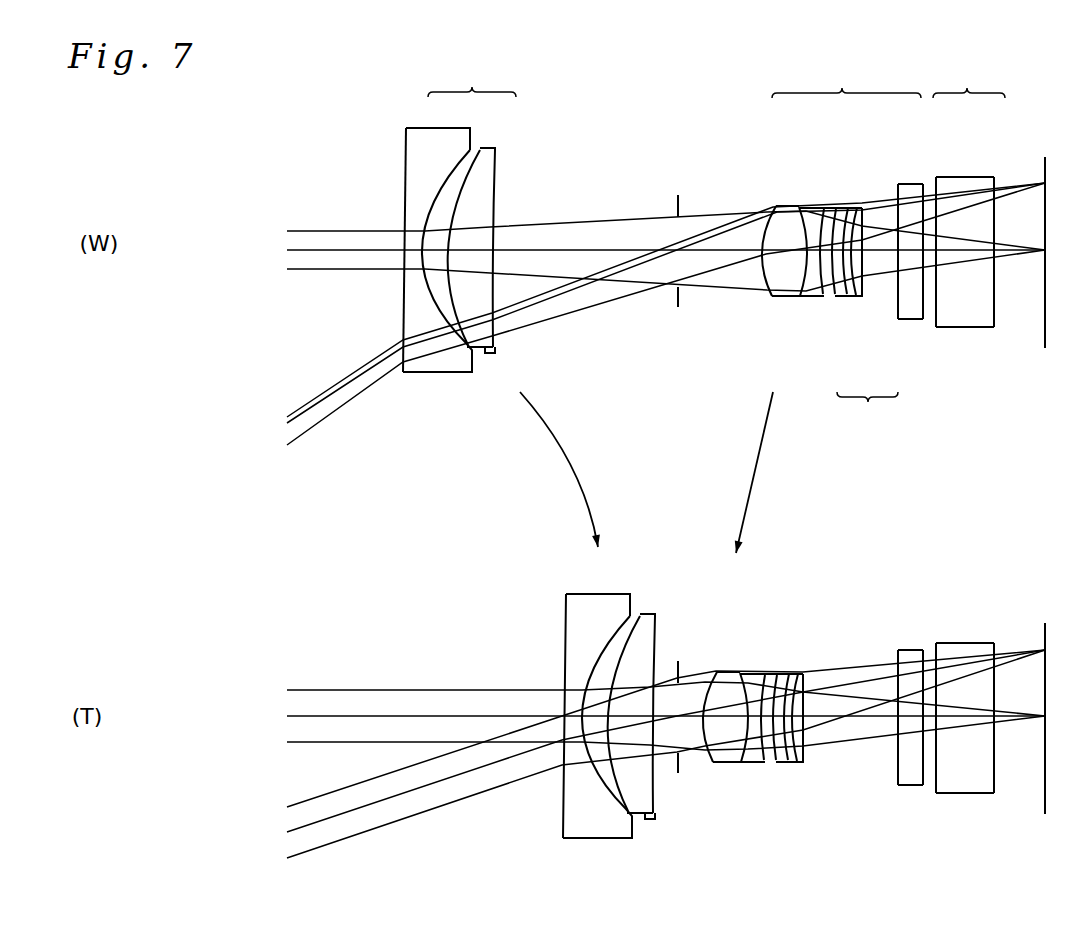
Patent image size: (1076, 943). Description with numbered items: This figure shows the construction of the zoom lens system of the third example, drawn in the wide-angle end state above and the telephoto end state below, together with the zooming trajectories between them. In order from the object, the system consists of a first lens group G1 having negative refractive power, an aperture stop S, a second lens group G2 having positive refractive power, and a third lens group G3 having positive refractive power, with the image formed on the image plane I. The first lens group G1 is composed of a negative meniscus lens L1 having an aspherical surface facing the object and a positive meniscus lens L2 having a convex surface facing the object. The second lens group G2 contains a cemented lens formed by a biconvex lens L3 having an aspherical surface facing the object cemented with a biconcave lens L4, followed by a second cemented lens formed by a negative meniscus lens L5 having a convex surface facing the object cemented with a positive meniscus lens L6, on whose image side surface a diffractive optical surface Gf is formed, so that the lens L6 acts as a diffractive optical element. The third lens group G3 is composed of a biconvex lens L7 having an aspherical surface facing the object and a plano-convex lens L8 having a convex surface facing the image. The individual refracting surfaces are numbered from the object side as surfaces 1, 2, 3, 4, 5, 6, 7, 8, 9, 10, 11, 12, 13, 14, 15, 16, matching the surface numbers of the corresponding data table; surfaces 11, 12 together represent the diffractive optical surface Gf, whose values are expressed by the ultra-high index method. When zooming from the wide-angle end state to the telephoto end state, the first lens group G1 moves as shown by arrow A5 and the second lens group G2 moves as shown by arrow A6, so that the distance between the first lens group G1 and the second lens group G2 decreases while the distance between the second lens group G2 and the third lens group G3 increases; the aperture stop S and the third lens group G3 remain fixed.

The surface number 1 is at (403, 372).
The surface number 2 is at (457, 349).
The surface number 3 is at (468, 350).
The surface number 4 is at (493, 352).
The surface number 5 is at (678, 307).
The surface number 6 is at (765, 298).
The surface number 7 is at (798, 298).
The surface number 8 is at (822, 295).
The surface number 9 is at (834, 295).
The surface number 10 is at (847, 296).
The surface number 11 is at (868, 300).
The surface number 12 is at (868, 300).
The surface number 13 is at (899, 319).
The surface number 14 is at (923, 319).
The surface number 15 is at (937, 327).
The surface number 16 is at (994, 327).
The first lens group G1 is at (472, 80).
The second lens group G2 is at (846, 81).
The third lens group G3 is at (969, 81).
The diffractive optical surface Gf is at (867, 410).
The negative meniscus lens L1 is at (437, 136).
The positive meniscus lens L2 is at (490, 150).
The biconvex lens L3 is at (787, 204).
The biconcave lens L4 is at (818, 207).
The negative meniscus lens L5 is at (850, 207).
The positive meniscus lens L6 is at (865, 209).
The biconvex lens L7 is at (912, 183).
The plano-convex lens L8 is at (965, 177).
The aperture stop S is at (678, 195).
The image plane I is at (1046, 157).
The arrow A5 is at (573, 467).
The arrow A6 is at (753, 475).